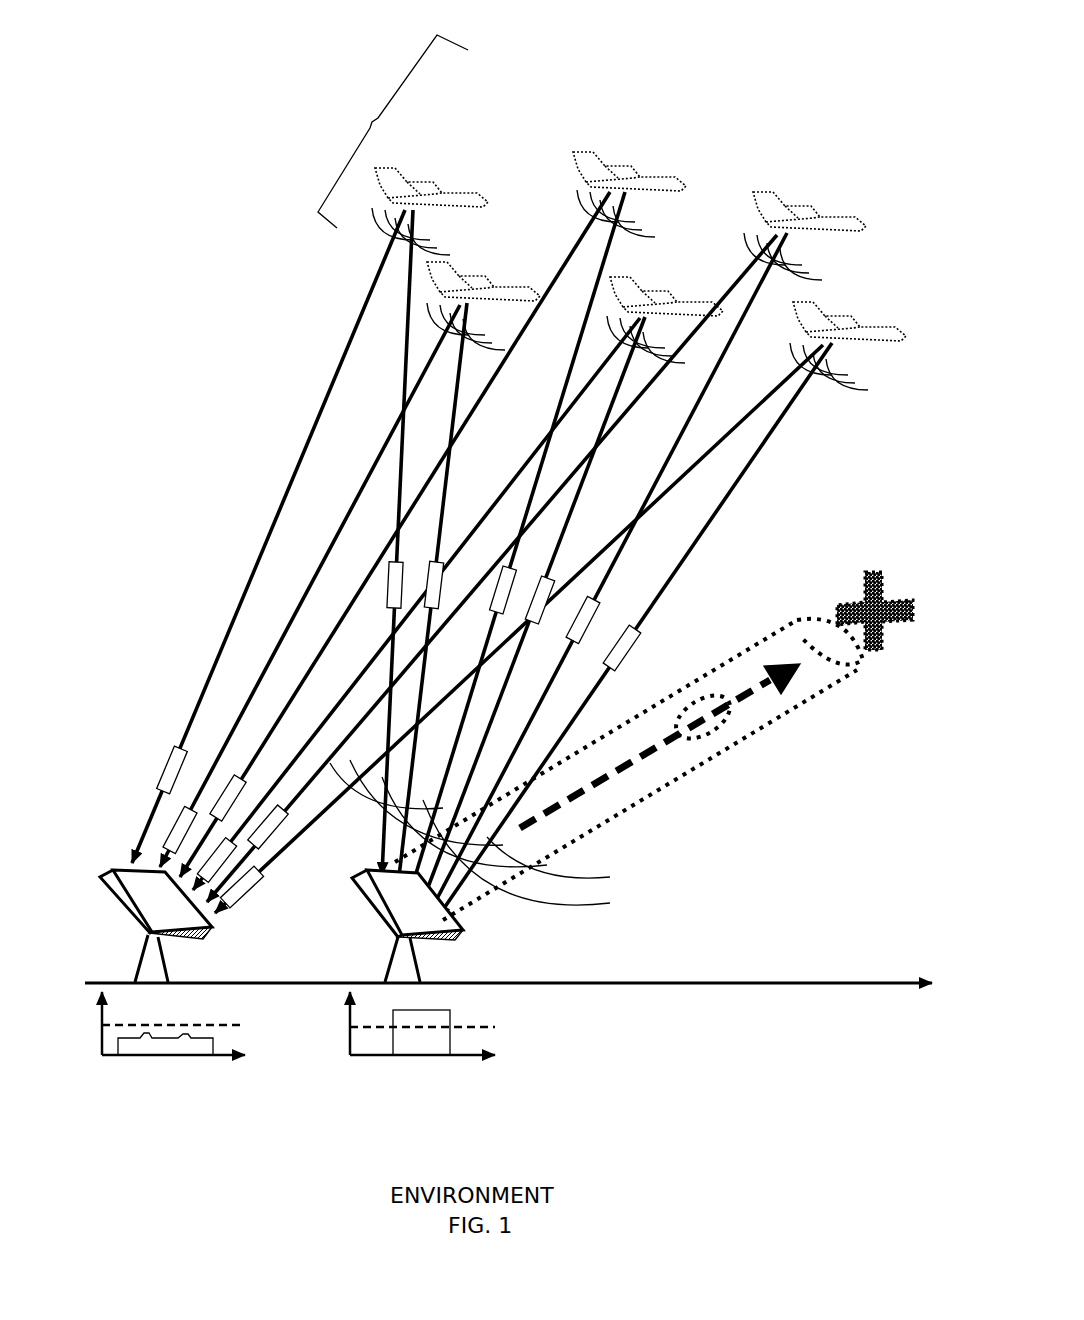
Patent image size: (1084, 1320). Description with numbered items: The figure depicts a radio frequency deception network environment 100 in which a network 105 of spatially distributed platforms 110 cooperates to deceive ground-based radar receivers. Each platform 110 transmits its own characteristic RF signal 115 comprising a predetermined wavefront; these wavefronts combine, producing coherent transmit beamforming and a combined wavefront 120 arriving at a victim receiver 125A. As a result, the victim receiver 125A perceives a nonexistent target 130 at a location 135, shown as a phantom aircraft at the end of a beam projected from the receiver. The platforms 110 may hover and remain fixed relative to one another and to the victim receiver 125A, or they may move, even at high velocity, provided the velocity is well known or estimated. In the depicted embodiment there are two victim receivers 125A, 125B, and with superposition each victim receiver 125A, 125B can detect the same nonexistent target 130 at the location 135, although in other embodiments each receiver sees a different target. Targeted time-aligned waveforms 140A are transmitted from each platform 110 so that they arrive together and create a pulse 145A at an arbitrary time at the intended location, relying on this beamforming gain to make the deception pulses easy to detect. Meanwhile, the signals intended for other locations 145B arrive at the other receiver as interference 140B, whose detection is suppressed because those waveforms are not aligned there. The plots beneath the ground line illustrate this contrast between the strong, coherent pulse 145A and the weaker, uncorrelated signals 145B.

The radio frequency deception network environment 100 is at (100, 28).
The network 105 is at (372, 120).
The platforms 110 is at (423, 175).
The characteristic RF signal 115 is at (777, 355).
The combined wavefront 120 is at (590, 873).
The victim receiver 125A is at (475, 930).
The victim receiver 125B is at (113, 860).
The nonexistent target 130 is at (896, 627).
The location 135 is at (836, 650).
The targeted time-aligned waveforms 140A is at (653, 630).
The interference 140B is at (165, 742).
The pulse 145A is at (422, 1046).
The signals intended for other locations 145B is at (173, 1046).